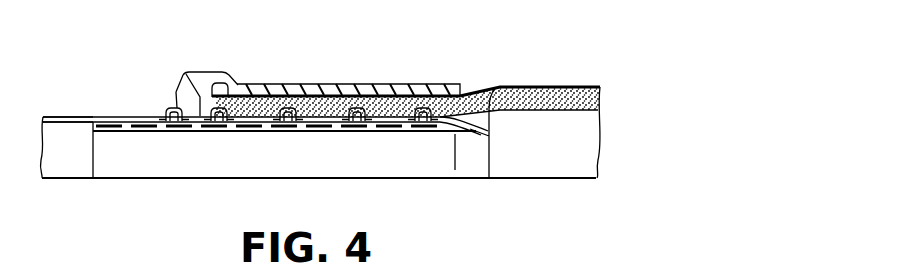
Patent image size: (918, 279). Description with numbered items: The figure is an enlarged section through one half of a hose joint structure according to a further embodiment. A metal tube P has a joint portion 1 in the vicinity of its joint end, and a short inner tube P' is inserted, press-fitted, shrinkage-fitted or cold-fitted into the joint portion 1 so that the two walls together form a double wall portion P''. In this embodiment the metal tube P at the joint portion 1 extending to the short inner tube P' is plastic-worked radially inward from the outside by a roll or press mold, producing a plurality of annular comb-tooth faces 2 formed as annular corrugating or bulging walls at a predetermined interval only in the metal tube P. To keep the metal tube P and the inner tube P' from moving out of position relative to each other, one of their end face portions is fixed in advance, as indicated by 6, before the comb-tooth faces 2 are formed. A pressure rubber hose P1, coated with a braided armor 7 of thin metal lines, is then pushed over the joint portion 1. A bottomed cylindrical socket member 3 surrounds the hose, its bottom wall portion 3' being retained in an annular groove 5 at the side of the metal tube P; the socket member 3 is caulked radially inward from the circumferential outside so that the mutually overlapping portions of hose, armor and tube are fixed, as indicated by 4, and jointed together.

The joint portion 1 is at (407, 117).
The annular comb-tooth faces 2 is at (305, 84).
The bottomed cylindrical socket member 3 is at (348, 56).
The bottom wall portion 3' is at (207, 66).
The fixing by caulking 4 is at (333, 84).
The annular groove 5 is at (176, 106).
The fixing of end face portion 6 is at (500, 86).
The braided armor 7 is at (585, 86).
The metal tube P is at (66, 117).
The short inner tube P' is at (319, 171).
The double wall portion P'' is at (265, 75).
The pressure rubber hose P1 is at (530, 87).